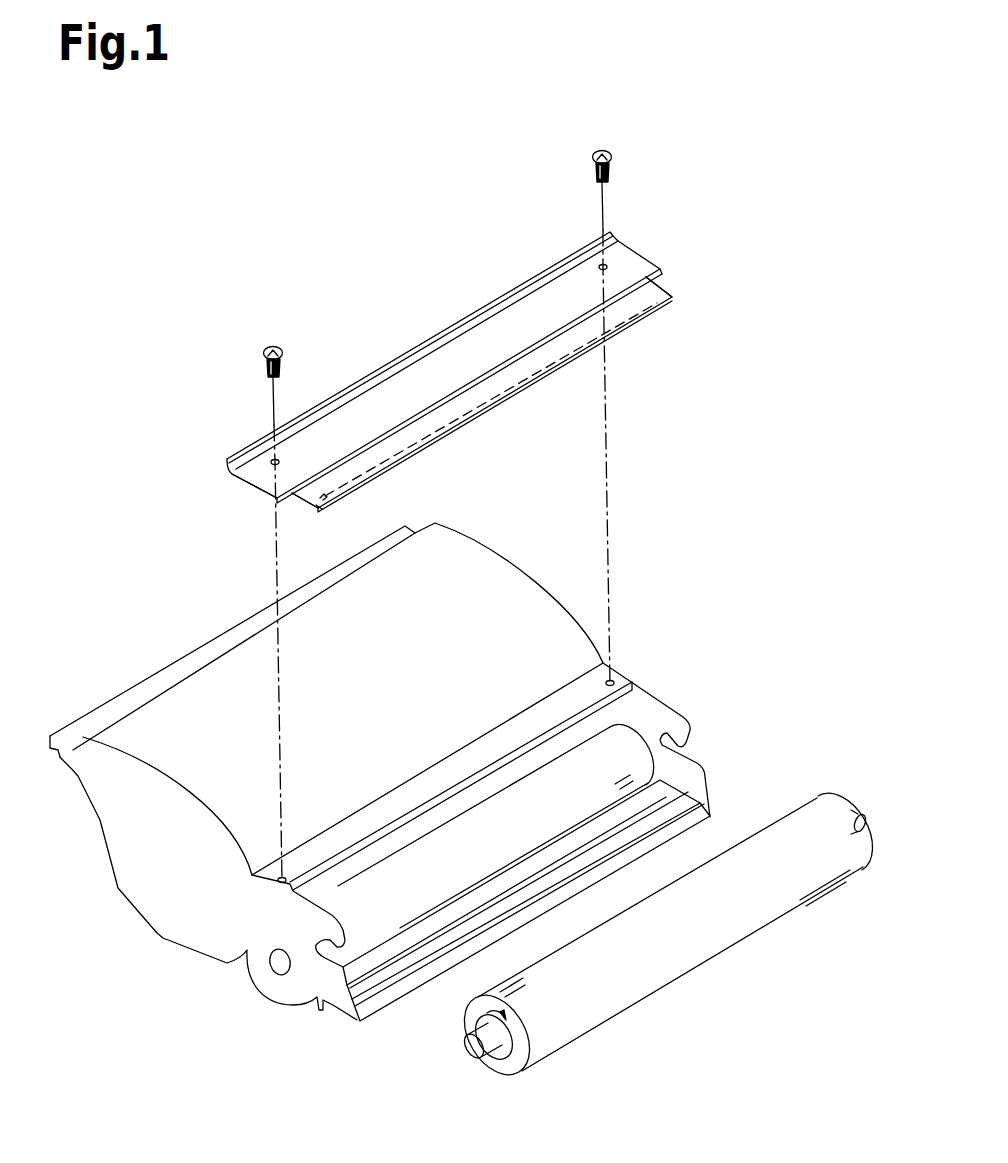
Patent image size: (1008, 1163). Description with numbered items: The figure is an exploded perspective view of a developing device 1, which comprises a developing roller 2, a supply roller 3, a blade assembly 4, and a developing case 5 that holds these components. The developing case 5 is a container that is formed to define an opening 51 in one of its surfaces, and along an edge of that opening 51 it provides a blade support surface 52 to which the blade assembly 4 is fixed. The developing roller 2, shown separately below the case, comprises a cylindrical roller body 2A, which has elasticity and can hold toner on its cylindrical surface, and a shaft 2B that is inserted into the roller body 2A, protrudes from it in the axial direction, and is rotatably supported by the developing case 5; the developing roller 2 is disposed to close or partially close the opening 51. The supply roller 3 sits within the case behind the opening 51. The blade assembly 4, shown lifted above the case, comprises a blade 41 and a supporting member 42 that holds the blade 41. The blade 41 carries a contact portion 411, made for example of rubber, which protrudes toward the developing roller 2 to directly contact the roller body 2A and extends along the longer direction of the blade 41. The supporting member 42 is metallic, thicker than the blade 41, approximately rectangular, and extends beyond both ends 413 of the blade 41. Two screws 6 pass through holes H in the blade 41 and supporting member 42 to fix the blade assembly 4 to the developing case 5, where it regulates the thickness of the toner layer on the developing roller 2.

The developing device 1 is at (373, 147).
The developing roller 2 is at (674, 942).
The roller body 2A is at (697, 953).
The shaft 2B is at (478, 1060).
The supply roller 3 is at (533, 790).
The blade assembly 4 is at (462, 318).
The blade 41 is at (620, 308).
The contact portion 411 is at (314, 511).
The ends of the blade 413 is at (305, 503).
The supporting member 42 is at (628, 252).
The developing case 5 is at (500, 550).
The opening 51 is at (433, 941).
The blade support surface 52 is at (462, 760).
The screws 6 is at (276, 347).
The holes H is at (271, 462).